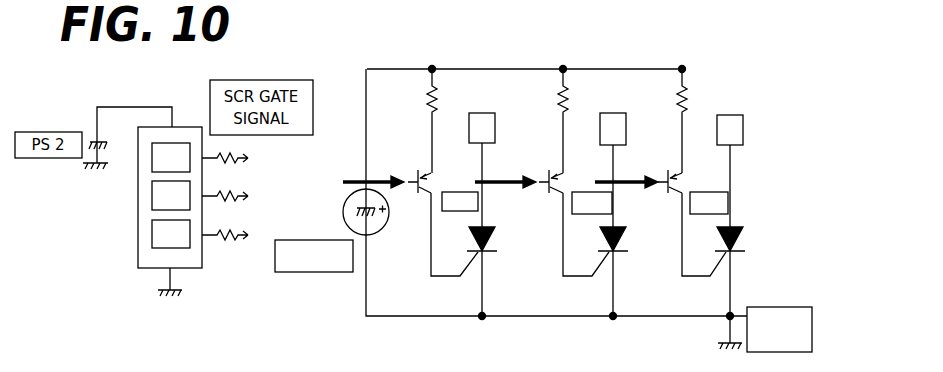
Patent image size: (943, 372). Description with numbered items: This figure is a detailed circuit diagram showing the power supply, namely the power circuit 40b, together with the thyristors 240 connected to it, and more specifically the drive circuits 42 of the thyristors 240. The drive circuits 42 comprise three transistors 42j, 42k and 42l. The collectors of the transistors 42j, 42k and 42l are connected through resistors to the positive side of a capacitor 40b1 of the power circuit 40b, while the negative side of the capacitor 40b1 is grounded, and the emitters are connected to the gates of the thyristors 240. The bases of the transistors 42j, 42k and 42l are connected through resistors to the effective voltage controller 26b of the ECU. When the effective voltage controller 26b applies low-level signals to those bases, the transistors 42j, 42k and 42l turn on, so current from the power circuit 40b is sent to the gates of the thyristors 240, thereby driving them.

The effective voltage controller 26b is at (157, 219).
The thyristors 240 is at (157, 249).
The power circuit 40b is at (290, 240).
The capacitor 40b1 is at (346, 203).
The drive circuits 42 is at (577, 190).
The transistor 42j is at (416, 173).
The transistor 42k is at (547, 173).
The transistor 42l is at (666, 175).